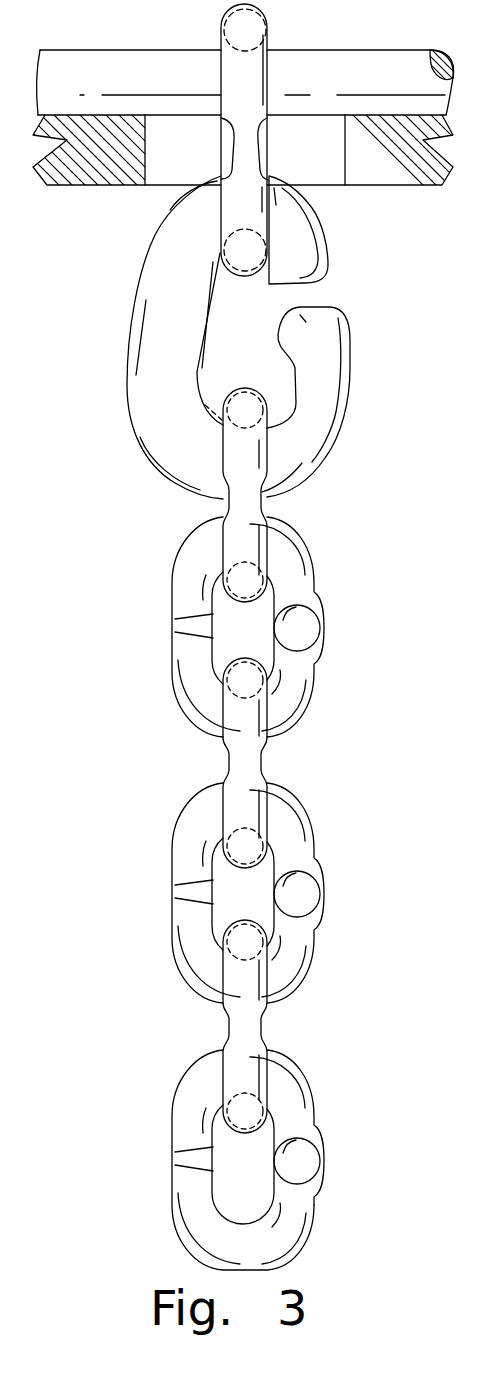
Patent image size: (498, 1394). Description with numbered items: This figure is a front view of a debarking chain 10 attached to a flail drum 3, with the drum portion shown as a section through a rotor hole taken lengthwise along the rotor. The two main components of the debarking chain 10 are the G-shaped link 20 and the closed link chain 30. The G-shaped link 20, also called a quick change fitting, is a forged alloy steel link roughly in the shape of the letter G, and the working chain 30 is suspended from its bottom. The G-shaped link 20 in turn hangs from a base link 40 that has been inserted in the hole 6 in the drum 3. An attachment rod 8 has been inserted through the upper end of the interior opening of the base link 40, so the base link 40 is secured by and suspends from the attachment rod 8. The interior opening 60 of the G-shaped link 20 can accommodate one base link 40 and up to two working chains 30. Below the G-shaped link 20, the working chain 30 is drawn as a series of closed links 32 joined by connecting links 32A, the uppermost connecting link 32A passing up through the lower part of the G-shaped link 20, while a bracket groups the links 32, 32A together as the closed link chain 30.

The drum 3 is at (398, 188).
The hole 6 is at (322, 177).
The attachment rod 8 is at (358, 62).
The debarking chain 10 is at (118, 496).
The G-shaped link 20 is at (342, 387).
The closed link chain 30 is at (380, 1275).
The chain link 32 is at (176, 687).
The connecting link 32A is at (243, 455).
The base link 40 is at (237, 207).
The hook opening 60 is at (257, 354).